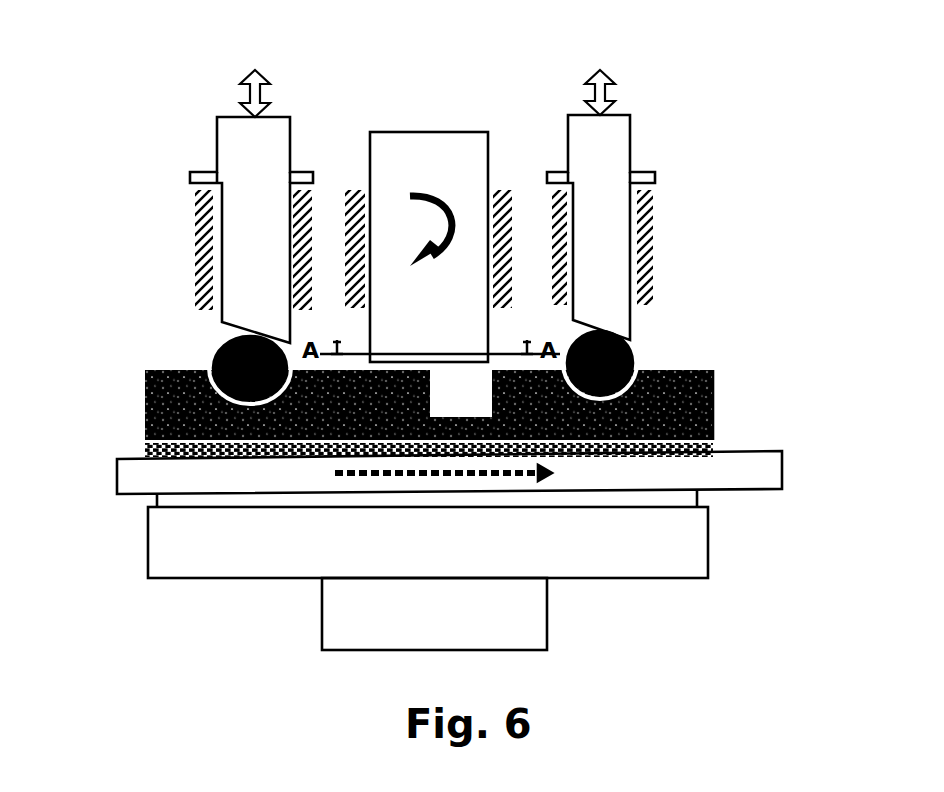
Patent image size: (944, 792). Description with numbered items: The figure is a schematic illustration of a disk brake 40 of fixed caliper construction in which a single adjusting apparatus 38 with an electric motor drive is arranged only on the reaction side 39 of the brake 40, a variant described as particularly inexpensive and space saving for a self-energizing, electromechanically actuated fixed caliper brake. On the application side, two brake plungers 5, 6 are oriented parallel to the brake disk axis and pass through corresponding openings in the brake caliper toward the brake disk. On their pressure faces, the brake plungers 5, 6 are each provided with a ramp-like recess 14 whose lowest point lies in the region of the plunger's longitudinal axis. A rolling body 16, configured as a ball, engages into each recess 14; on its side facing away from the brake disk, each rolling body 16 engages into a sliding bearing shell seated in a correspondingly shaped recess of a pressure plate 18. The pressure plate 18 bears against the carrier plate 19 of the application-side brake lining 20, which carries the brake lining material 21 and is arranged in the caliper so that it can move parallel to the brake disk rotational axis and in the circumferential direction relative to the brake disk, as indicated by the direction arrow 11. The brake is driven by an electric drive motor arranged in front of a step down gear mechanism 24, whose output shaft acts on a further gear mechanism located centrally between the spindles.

The brake plunger 5 is at (232, 147).
The brake plunger 6 is at (615, 140).
The ramp-like recess 14 is at (468, 158).
The rolling body 16 is at (634, 356).
The pressure plate 18 is at (708, 380).
The application-side brake lining 20 is at (730, 402).
The conveying direction 11 is at (463, 480).
The brake lining material 21 is at (386, 478).
The carrier plate 19 is at (713, 450).
The step down gear mechanism 24 is at (735, 469).
The adjusting apparatus 38 is at (547, 612).
The reaction side 39 is at (63, 648).
The brake 40 is at (790, 45).